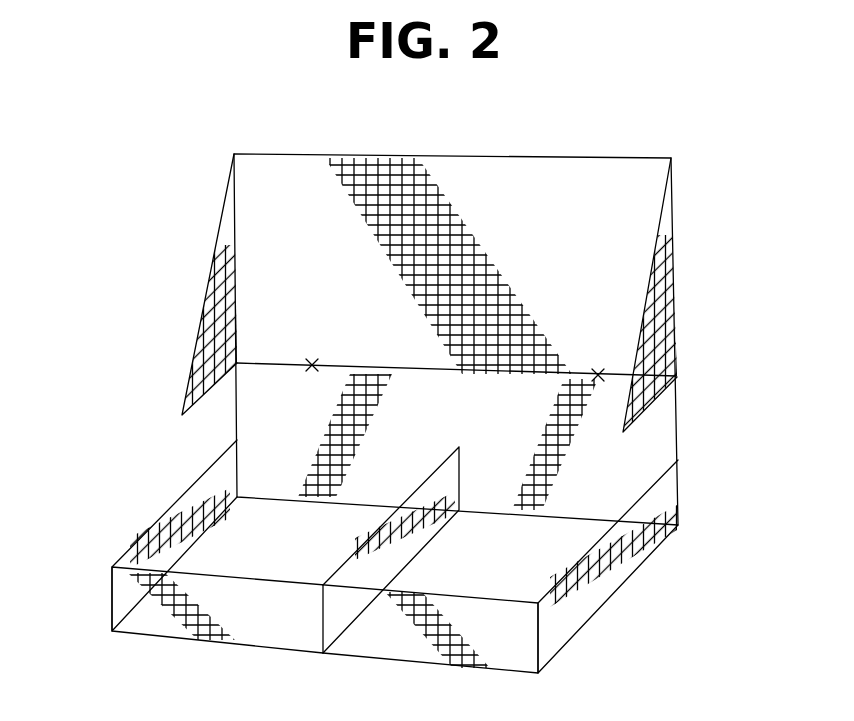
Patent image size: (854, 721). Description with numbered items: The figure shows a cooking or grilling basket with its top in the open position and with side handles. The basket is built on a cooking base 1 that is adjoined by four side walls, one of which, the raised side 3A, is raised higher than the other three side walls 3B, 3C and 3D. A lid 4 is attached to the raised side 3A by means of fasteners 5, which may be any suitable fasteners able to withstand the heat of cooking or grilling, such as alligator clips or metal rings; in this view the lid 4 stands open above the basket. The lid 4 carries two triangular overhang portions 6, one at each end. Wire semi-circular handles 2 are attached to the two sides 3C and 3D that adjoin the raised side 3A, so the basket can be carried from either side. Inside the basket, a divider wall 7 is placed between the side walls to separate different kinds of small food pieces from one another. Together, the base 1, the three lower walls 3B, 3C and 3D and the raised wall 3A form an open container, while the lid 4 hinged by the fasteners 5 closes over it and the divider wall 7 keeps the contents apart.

The cooking base 1 is at (538, 576).
The wire semi-circular handles 2 is at (224, 486).
The raised side wall 3A is at (522, 433).
The side wall 3B is at (263, 627).
The side wall 3C is at (220, 458).
The side wall 3D is at (562, 625).
The lid 4 is at (457, 180).
The fasteners 5 is at (597, 370).
The triangular overhang portions 6 is at (217, 253).
The divider wall 7 is at (403, 552).